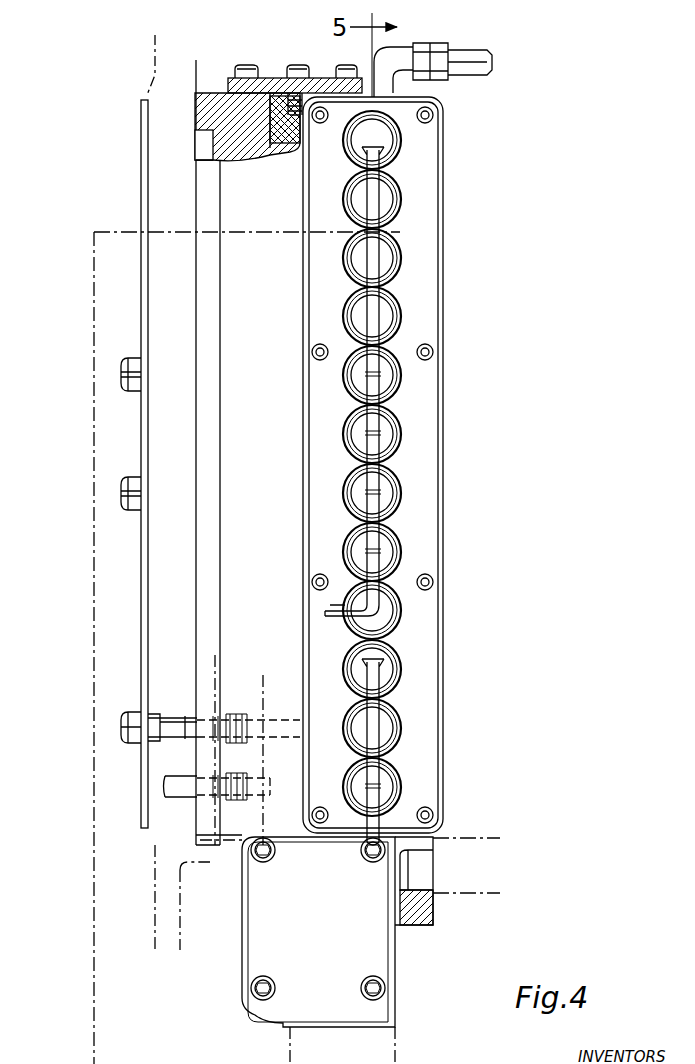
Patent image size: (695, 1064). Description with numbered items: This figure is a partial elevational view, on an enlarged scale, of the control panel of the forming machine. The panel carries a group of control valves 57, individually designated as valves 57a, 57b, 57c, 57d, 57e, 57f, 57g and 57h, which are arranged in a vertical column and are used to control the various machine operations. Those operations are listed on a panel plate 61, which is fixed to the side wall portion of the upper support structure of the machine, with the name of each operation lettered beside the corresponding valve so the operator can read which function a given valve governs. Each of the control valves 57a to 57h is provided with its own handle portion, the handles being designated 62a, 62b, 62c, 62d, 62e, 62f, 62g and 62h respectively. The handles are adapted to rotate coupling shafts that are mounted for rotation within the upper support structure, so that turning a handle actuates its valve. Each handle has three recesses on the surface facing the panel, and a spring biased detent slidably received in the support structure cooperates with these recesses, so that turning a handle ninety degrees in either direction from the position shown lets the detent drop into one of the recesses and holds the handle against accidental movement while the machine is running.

The control valves 57 is at (376, 471).
The panel plate 61 is at (418, 176).
The control valve 57a is at (392, 140).
The control valve 57b is at (392, 360).
The control valve 57c is at (395, 430).
The control valve 57d is at (395, 492).
The control valve 57e is at (395, 548).
The control valve 57f is at (398, 622).
The control valve 57g is at (392, 728).
The control valve 57h is at (395, 783).
The handle portion 62a is at (360, 168).
The handle portion 62b is at (348, 400).
The handle portion 62c is at (372, 453).
The handle portion 62d is at (375, 505).
The handle portion 62e is at (372, 565).
The handle portion 62f is at (335, 618).
The handle portion 62g is at (375, 740).
The handle portion 62h is at (325, 800).